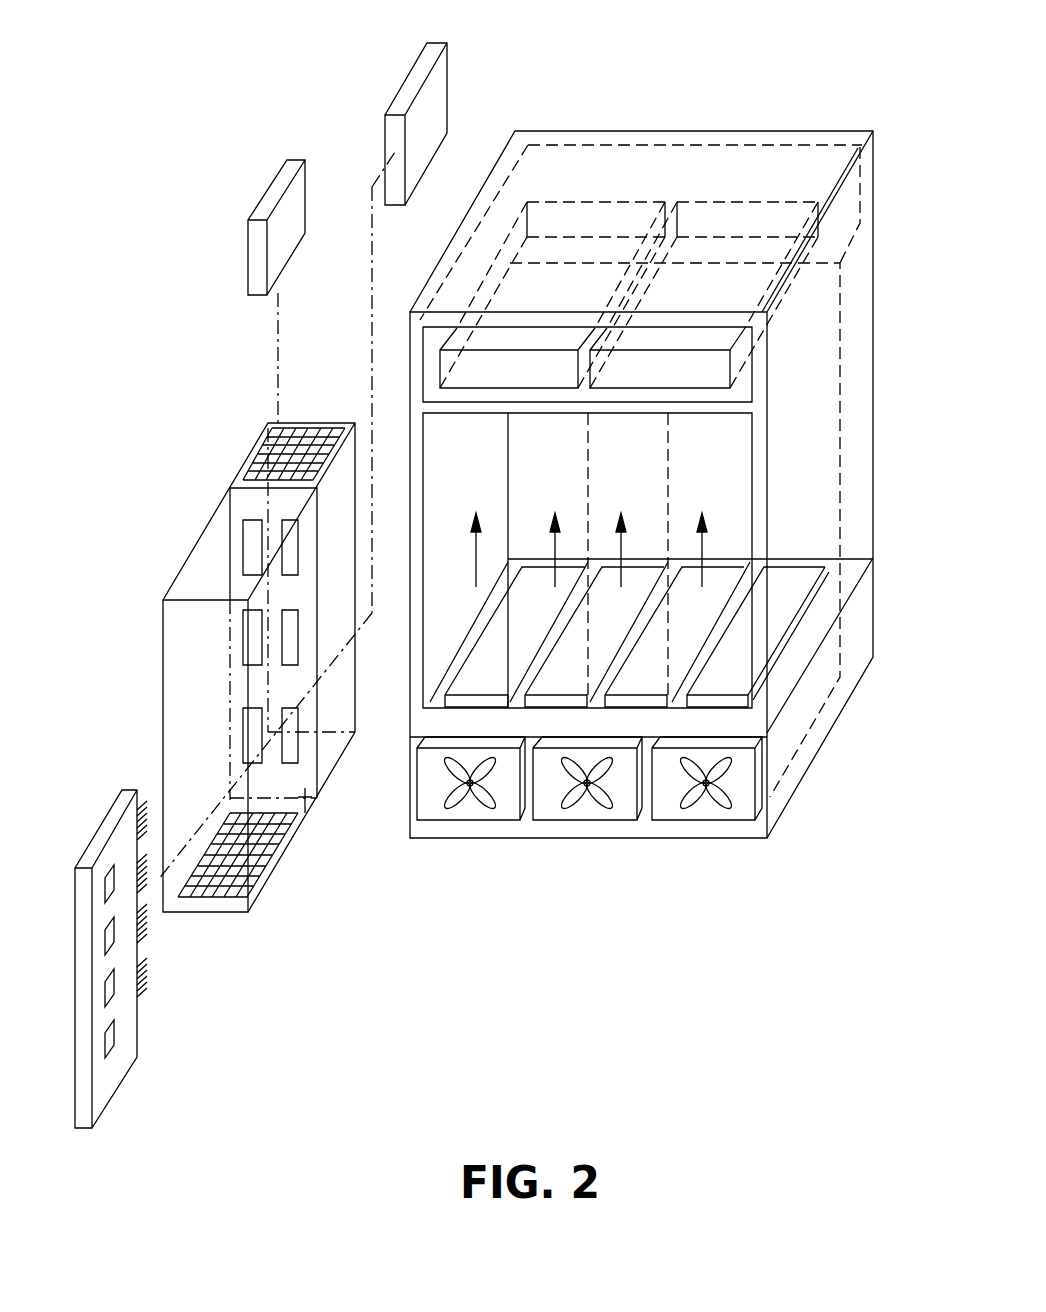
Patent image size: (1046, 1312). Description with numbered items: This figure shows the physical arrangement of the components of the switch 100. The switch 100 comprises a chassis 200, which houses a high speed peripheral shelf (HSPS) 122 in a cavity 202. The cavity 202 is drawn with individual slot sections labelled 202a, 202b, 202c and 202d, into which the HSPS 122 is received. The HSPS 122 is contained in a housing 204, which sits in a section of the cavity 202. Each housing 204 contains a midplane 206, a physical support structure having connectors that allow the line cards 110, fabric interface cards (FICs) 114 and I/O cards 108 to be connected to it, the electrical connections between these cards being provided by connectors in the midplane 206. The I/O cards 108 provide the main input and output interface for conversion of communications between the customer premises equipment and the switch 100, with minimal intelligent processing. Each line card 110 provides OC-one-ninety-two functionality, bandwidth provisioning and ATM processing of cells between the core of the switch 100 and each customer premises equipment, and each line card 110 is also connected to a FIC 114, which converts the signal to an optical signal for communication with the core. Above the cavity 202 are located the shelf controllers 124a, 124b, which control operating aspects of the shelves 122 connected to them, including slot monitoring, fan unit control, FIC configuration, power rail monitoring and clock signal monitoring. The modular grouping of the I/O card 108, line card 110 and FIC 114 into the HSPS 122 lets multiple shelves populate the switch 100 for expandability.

The switch 100 is at (655, 930).
The chassis 200 is at (830, 131).
The cavity 202 is at (697, 485).
The first slot 202a is at (745, 457).
The second slot 202b is at (665, 457).
The third slot 202c is at (587, 457).
The fourth slot 202d is at (502, 457).
The first power supply module 124a is at (545, 382).
The second power supply module 124b is at (697, 382).
The I/O card 108 is at (438, 93).
The fabric interface card 114 is at (277, 190).
The high speed peripheral shelf 122 is at (200, 538).
The housing 204 is at (162, 710).
The midplane 206 is at (305, 798).
The line card 110 is at (120, 1066).